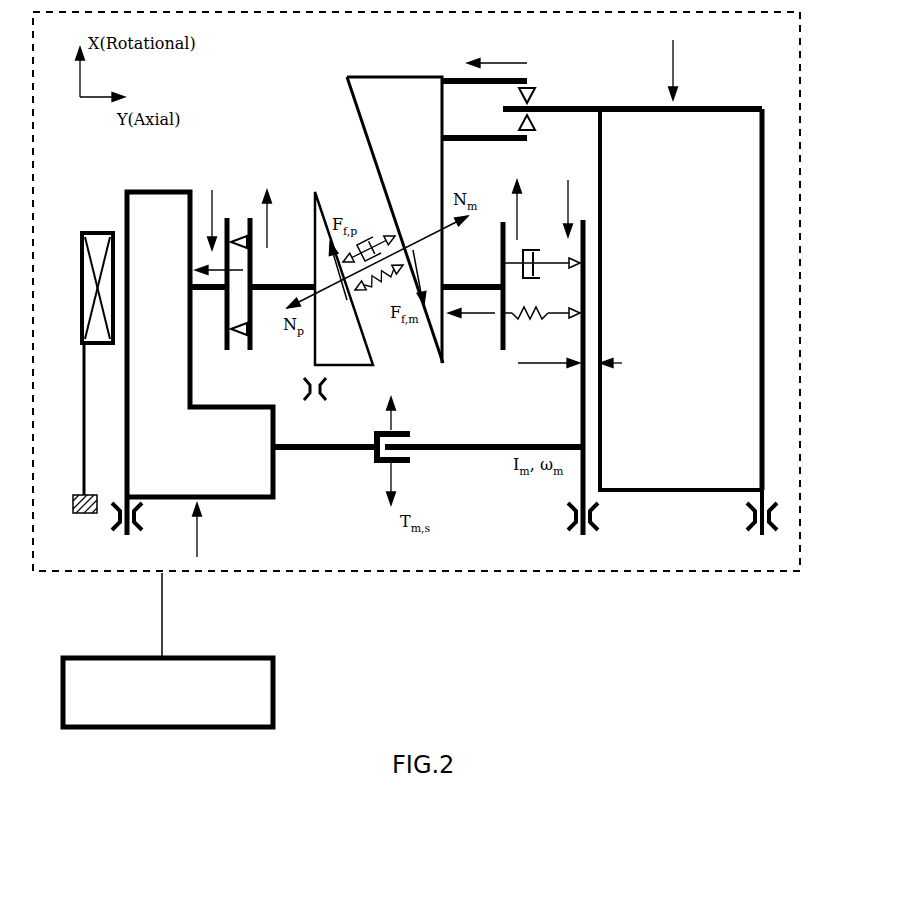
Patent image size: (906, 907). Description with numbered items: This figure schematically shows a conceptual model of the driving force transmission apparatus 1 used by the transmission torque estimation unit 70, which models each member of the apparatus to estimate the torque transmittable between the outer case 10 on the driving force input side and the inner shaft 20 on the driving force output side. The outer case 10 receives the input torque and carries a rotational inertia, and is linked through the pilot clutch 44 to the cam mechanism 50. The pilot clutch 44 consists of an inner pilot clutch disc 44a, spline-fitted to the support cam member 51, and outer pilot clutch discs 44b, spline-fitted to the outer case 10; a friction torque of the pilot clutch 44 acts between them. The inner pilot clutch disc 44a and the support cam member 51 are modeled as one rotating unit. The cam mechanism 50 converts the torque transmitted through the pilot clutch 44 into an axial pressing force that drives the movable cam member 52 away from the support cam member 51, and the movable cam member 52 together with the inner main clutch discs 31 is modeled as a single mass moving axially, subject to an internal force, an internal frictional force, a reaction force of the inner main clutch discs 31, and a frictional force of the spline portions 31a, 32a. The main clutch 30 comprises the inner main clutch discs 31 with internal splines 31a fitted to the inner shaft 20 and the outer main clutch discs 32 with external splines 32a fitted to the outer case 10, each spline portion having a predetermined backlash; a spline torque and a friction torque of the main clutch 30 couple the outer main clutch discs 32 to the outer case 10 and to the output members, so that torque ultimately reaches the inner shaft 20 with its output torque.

The driving force transmission apparatus 1 is at (393, 573).
The outer case 10 is at (125, 210).
The inner shaft 20 is at (680, 492).
The main clutch 30 is at (532, 353).
The inner main clutch disc 31 is at (582, 388).
The internal splines 31a is at (552, 88).
The outer main clutch disc 32 is at (501, 242).
The external splines 32a is at (582, 83).
The pilot clutch 44 is at (253, 252).
The inner pilot clutch disc 44a is at (251, 330).
The outer pilot clutch discs 44b is at (226, 330).
The cam mechanism 50 is at (396, 230).
The support cam member 51 is at (352, 368).
The movable cam member 52 is at (440, 340).
The transmission torque estimation unit 70 is at (273, 695).